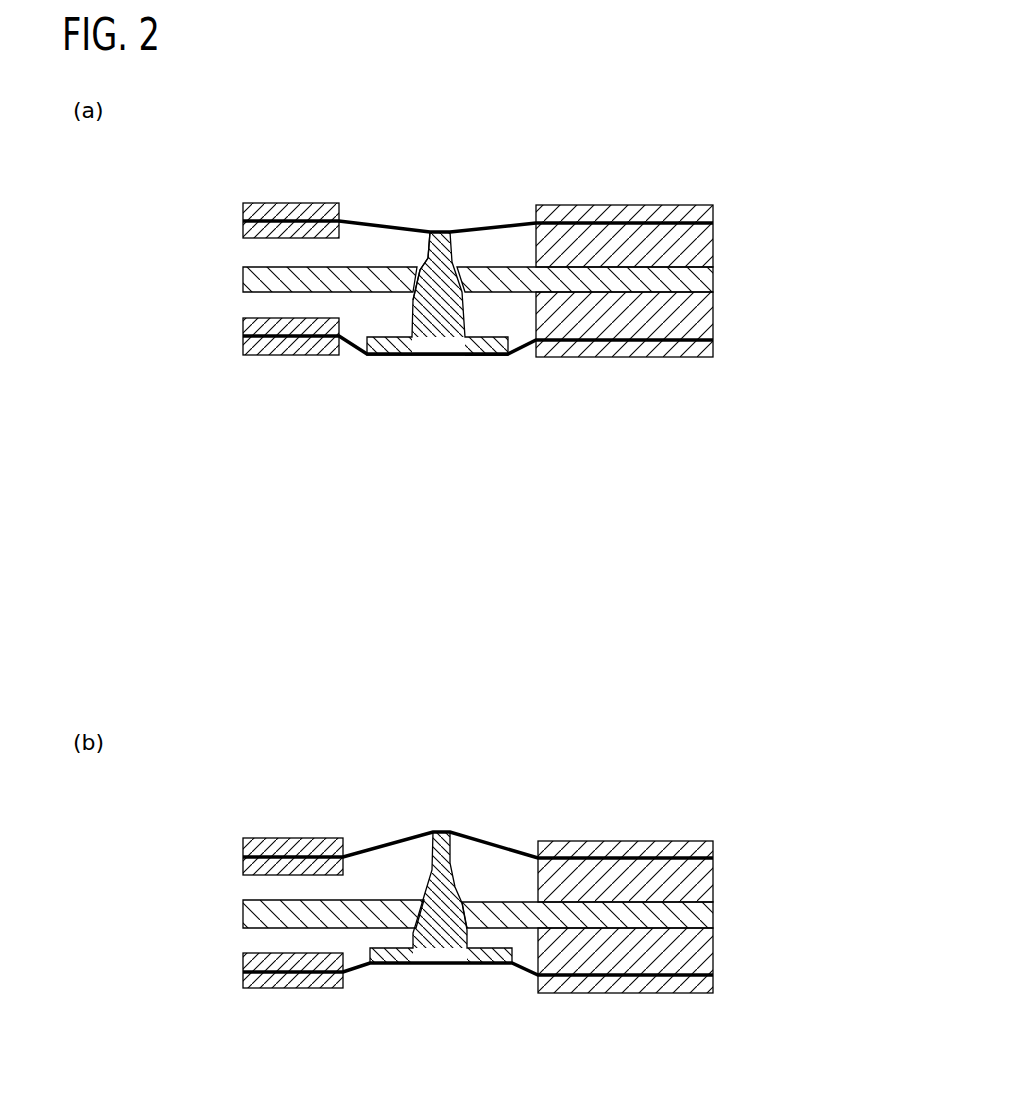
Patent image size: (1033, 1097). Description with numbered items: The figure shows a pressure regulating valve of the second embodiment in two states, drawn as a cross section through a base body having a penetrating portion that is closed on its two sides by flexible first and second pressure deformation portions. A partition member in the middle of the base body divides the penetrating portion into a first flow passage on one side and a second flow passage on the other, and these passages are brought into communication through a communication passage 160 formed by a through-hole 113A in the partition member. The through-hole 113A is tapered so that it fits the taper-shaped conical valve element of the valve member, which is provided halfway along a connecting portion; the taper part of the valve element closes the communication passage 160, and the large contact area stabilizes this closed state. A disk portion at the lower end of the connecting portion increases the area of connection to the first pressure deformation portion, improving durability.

The through-hole 113A is at (427, 280).
The communication passage 160 is at (515, 347).